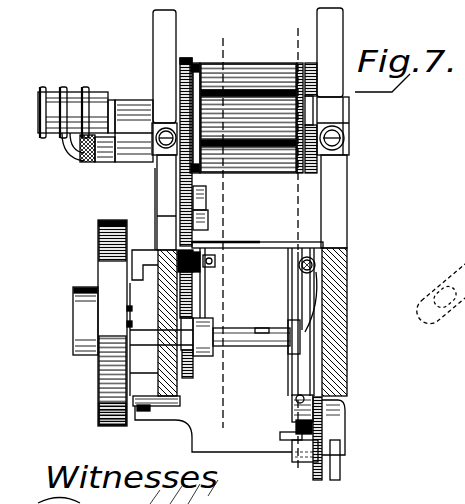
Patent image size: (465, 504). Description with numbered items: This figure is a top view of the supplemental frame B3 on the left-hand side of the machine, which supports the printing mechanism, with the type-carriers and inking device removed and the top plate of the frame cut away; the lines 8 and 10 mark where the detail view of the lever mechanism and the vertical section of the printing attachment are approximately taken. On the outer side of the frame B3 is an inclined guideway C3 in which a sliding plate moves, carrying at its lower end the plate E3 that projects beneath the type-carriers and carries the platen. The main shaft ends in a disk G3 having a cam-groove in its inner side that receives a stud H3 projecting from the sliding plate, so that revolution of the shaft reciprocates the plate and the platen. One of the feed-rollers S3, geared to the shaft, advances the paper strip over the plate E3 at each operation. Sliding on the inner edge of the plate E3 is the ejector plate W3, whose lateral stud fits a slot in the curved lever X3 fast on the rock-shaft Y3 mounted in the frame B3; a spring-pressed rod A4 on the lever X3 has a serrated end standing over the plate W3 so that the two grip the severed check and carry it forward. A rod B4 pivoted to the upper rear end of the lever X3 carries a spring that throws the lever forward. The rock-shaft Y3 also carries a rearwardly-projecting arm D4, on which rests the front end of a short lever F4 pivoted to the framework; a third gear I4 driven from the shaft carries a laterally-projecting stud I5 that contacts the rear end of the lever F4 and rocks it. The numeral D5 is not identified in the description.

The section line 8 8 is at (234, 33).
The section line 10 10 is at (280, 27).
The feed-roller S3 is at (251, 60).
The disk G3 is at (113, 217).
The inclined guideway C3 is at (143, 250).
The pins D5 is at (132, 319).
The stud H3 is at (161, 344).
The third gear I4 is at (207, 200).
The laterally-projecting stud I5 is at (208, 218).
The short lever F4 is at (221, 285).
The rearwardly-projecting arm D4 is at (228, 311).
The rock-shaft Y3 is at (263, 330).
The plate E3 is at (224, 384).
The supplemental frame B3 is at (340, 211).
The rod B4 is at (316, 264).
The curved lever X3 is at (313, 397).
The sliding rod or pin A4 is at (289, 443).
The plate W3 is at (299, 452).